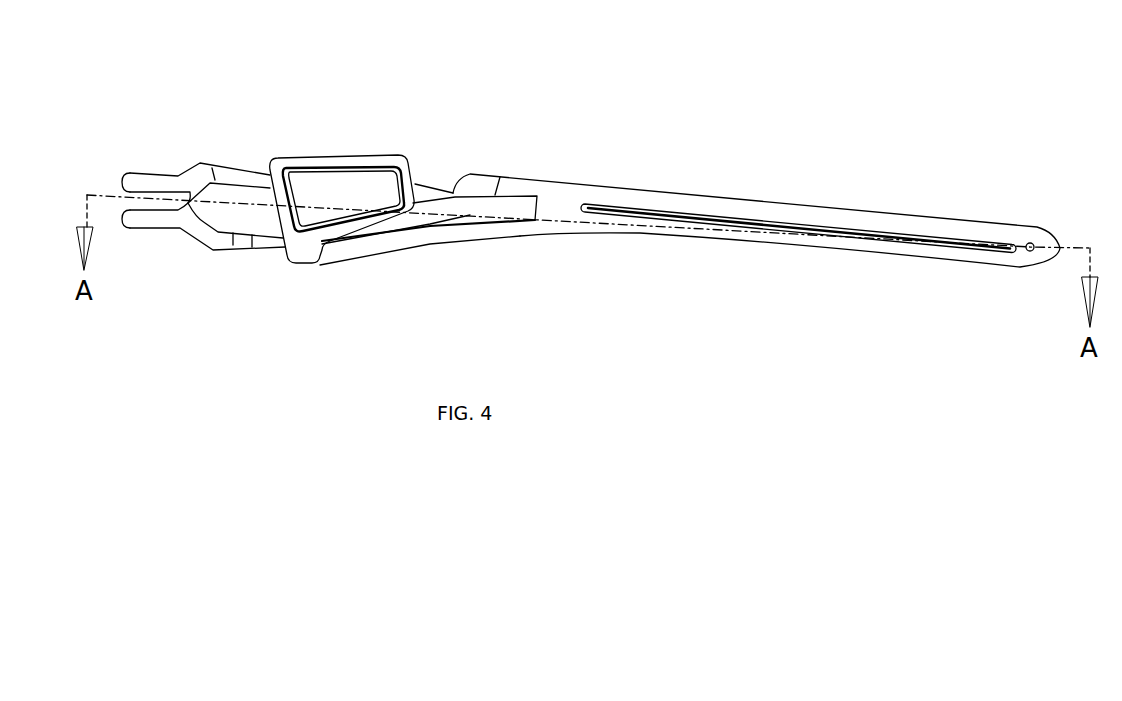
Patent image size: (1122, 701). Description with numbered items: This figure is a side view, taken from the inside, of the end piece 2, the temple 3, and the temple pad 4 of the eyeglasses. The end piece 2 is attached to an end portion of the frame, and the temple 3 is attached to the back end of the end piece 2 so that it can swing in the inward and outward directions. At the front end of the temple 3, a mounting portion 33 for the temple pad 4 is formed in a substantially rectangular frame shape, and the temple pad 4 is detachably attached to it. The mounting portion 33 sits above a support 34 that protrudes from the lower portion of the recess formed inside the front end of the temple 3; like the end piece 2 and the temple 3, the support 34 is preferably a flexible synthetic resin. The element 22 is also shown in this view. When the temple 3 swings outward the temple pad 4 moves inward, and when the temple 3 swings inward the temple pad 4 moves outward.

The end piece 2 is at (238, 167).
The temple 3 is at (732, 198).
The temple pad 4 is at (338, 188).
The plate 22 is at (435, 222).
The mounting portion 33 is at (365, 152).
The support 34 is at (390, 253).